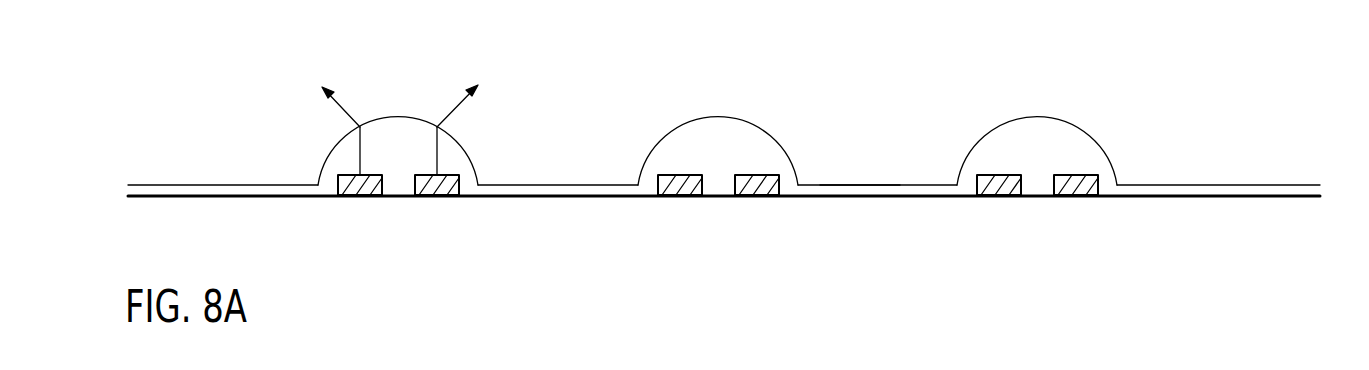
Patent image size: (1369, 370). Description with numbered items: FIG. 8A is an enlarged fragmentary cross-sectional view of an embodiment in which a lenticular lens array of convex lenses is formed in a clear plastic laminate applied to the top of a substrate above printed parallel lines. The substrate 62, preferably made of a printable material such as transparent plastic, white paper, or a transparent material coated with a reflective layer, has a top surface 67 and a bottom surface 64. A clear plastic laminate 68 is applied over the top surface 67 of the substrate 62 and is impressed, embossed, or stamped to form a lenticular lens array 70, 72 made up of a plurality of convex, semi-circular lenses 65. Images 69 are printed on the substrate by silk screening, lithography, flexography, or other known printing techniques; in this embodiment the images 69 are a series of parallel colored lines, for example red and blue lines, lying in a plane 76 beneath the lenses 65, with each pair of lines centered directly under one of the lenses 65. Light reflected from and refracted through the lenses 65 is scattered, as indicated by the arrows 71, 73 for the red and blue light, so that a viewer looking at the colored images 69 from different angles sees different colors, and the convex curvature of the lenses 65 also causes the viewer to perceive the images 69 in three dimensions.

The substrate 62 is at (1225, 197).
The bottom surface 64 is at (1128, 198).
The convex lenses 65 is at (400, 116).
The top surface 67 is at (176, 194).
The clear plastic laminate 68 is at (113, 190).
The images 69 is at (436, 190).
The lenticular lens array 70 is at (856, 185).
The arrow 71 is at (336, 119).
The lenticular lens array 72 is at (560, 185).
The arrow 73 is at (462, 119).
The plane 76 is at (1303, 173).